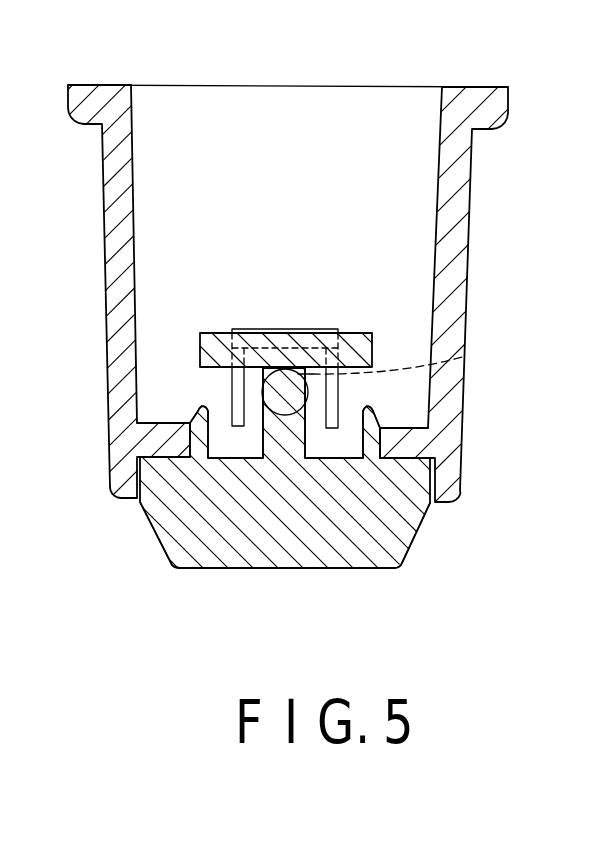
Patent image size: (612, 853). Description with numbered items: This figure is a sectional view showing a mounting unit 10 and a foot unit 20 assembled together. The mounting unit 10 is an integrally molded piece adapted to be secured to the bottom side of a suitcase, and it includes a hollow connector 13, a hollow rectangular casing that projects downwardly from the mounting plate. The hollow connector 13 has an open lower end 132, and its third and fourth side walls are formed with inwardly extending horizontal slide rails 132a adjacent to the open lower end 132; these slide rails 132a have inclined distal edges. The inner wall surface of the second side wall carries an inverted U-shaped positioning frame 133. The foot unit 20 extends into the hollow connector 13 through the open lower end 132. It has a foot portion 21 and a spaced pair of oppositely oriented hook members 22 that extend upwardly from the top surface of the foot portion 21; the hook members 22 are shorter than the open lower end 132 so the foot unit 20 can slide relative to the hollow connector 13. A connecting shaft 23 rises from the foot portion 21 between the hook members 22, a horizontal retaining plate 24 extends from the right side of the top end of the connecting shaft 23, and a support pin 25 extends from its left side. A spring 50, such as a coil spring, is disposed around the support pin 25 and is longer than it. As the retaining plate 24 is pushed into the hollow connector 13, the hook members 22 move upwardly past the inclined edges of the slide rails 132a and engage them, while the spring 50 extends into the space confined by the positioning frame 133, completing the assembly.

The mounting unit 10 is at (124, 80).
The hollow connector 13 is at (103, 256).
The foot unit 20 is at (421, 543).
The foot portion 21 is at (200, 556).
The hook members 22 is at (377, 425).
The connecting shaft 23 is at (298, 438).
The retaining plate 24 is at (200, 346).
The support pin 25 is at (466, 356).
The spring 50 is at (248, 388).
The open lower end 132 is at (137, 480).
The slide rails 132a is at (188, 436).
The positioning frame 133 is at (333, 403).